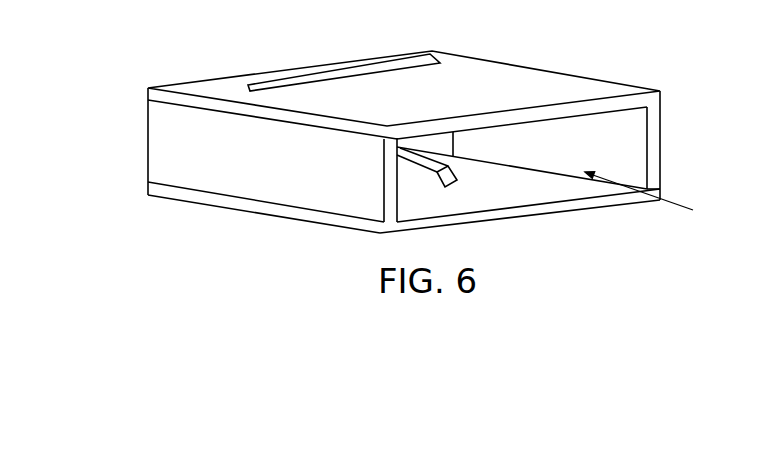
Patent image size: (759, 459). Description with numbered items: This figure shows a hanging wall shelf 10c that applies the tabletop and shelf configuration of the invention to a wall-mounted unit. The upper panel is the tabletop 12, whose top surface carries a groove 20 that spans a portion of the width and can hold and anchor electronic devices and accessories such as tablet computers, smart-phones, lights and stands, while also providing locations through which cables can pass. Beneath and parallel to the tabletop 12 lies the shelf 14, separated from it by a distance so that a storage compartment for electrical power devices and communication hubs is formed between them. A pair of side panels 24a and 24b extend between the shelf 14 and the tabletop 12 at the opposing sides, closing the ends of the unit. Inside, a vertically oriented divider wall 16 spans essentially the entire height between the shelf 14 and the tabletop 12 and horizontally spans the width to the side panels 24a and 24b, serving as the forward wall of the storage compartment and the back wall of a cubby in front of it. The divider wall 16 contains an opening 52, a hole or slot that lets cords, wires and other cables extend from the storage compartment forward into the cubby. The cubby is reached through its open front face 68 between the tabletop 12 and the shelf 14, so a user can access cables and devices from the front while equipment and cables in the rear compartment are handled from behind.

The wall shelf 10c is at (387, 132).
The tabletop 12 is at (480, 82).
The groove 20 is at (428, 65).
The side panel 24a is at (188, 156).
The side panel 24b is at (622, 155).
The shelf 14 is at (433, 203).
The divider wall 16 is at (445, 147).
The opening 52 is at (408, 153).
The open front face 68 is at (649, 201).